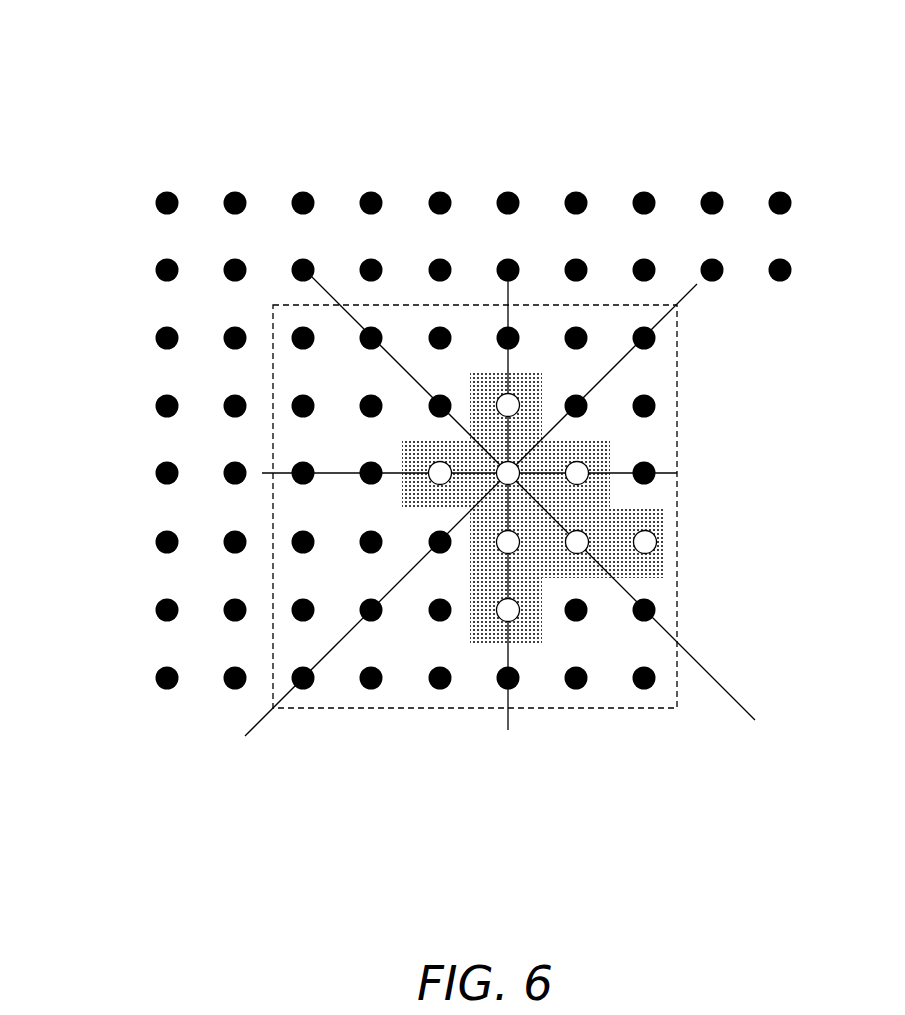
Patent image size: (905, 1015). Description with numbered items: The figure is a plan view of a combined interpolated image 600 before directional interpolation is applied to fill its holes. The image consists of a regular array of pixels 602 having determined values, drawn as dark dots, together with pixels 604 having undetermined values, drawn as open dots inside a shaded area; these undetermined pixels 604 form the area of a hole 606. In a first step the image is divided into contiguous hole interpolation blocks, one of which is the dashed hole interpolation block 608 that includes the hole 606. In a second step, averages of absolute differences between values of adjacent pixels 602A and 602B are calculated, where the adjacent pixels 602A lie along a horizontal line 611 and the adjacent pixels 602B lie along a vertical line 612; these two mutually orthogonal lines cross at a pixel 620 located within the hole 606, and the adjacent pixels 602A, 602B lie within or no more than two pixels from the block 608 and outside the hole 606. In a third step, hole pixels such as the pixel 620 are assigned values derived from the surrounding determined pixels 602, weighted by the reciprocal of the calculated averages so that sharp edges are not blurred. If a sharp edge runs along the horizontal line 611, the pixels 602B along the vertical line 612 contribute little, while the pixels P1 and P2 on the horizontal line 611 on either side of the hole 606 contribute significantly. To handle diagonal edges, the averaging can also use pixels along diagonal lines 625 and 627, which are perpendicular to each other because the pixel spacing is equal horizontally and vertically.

The combined interpolated image 600 is at (744, 51).
The pixels having determined values 602 is at (157, 481).
The adjacent pixels along horizontal line 602A is at (296, 462).
The adjacent pixels along vertical line 602B is at (498, 335).
The pixels having undetermined values 604 is at (641, 546).
The hole 606 is at (655, 578).
The hole interpolation block 608 is at (677, 420).
The horizontal line 611 is at (677, 473).
The vertical line 612 is at (508, 732).
The pixel at crossing of orthogonal lines 620 is at (511, 471).
The first diagonal line 625 is at (733, 694).
The second diagonal line 627 is at (258, 725).
The pixel on horizontal line P1 is at (373, 462).
The pixel on horizontal line P2 is at (638, 463).